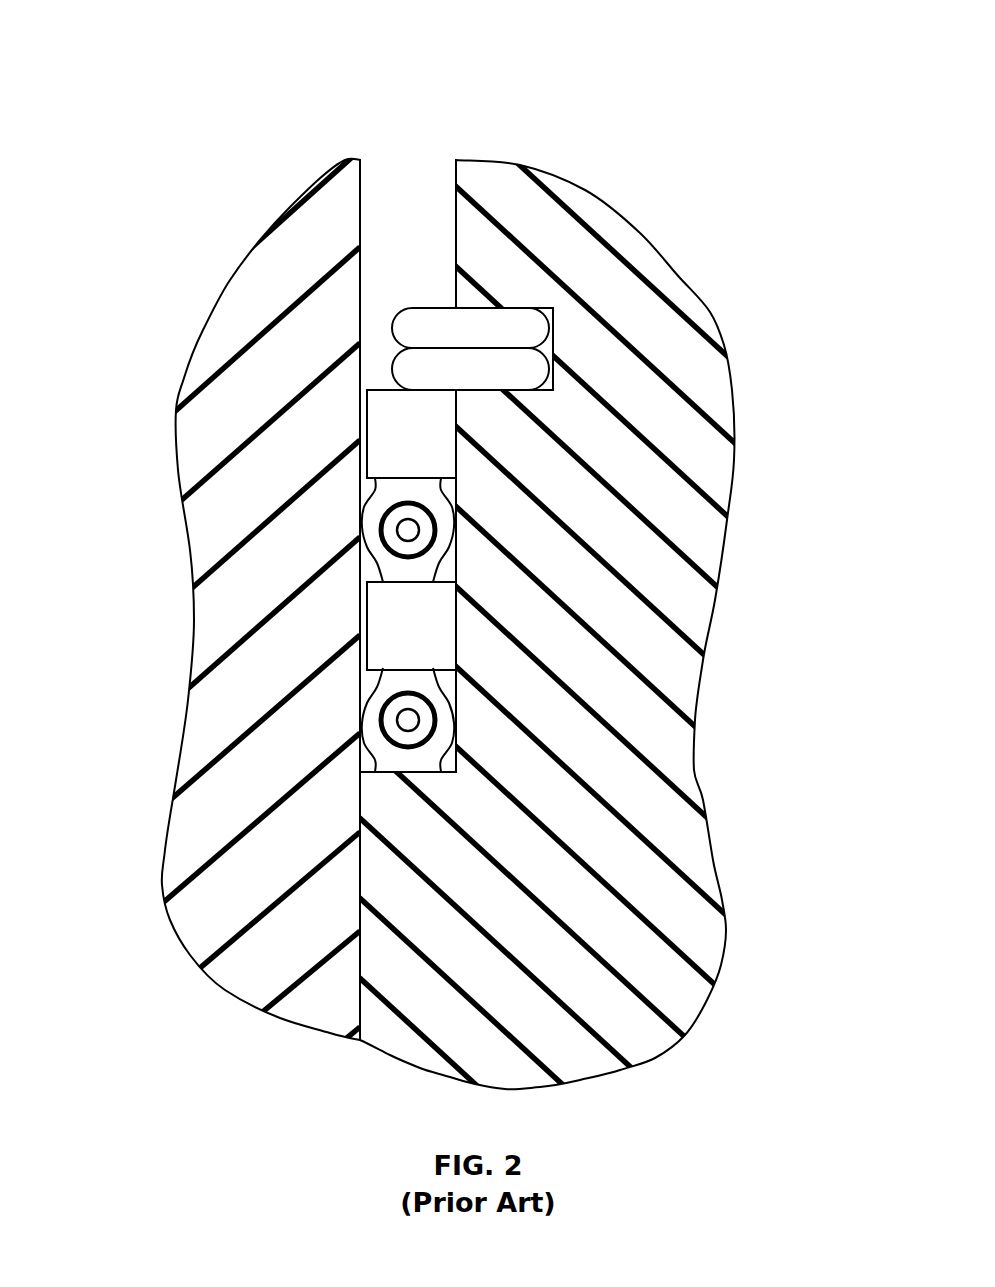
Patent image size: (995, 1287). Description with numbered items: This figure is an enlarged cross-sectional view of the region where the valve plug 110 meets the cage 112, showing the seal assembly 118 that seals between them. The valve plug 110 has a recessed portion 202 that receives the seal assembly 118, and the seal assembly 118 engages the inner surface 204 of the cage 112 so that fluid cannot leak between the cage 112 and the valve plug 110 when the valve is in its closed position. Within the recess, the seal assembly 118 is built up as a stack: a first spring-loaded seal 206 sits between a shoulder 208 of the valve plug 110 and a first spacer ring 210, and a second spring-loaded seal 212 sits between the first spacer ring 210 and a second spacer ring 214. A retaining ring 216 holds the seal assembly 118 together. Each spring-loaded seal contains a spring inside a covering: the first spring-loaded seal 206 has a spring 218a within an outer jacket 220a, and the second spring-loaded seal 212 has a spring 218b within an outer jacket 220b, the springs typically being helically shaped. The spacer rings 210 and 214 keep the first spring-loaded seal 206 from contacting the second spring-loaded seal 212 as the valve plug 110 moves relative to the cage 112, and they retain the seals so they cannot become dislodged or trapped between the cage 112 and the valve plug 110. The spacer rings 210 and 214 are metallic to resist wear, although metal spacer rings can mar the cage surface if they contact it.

The valve plug 110 is at (677, 608).
The cage 112 is at (267, 237).
The seal assembly 118 is at (407, 262).
The recessed portion 202 is at (457, 648).
The inner surface 204 is at (362, 205).
The first spring-loaded seal 206 is at (470, 741).
The shoulder 208 is at (437, 777).
The first spacer ring 210 is at (395, 637).
The second spring-loaded seal 212 is at (470, 565).
The second spacer ring 214 is at (395, 443).
The retaining ring 216 is at (515, 362).
The spring 218a is at (393, 707).
The spring 218b is at (393, 523).
The outer jacket 220a is at (373, 726).
The outer jacket 220b is at (423, 495).